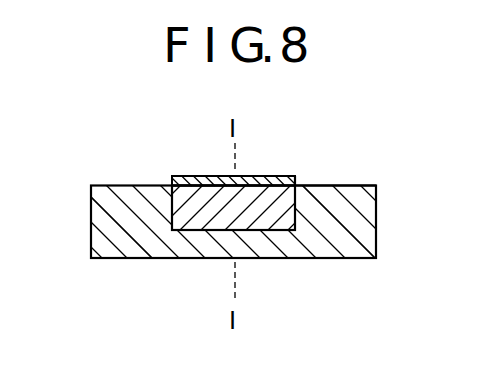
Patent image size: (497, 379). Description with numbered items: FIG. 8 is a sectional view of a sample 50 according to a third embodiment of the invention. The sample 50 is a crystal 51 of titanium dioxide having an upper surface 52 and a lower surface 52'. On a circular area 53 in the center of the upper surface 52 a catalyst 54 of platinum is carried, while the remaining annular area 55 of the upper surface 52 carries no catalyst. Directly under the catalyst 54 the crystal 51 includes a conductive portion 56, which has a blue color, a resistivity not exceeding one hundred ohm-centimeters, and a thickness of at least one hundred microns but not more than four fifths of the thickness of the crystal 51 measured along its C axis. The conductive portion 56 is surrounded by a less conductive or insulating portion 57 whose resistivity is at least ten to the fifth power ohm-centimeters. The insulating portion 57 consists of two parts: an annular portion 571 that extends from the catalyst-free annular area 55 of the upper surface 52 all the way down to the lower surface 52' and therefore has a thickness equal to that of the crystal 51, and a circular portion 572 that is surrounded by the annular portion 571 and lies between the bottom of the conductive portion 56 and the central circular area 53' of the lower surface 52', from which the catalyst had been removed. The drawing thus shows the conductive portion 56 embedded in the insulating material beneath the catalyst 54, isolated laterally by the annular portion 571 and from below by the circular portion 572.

The sample 50 is at (90, 251).
The crystal 51 is at (377, 210).
The upper surface 52 is at (339, 163).
The lower surface 52' is at (338, 282).
The circular area 53 is at (302, 162).
The central circular area 53' is at (265, 282).
The catalyst 54 is at (250, 176).
The annular area 55 is at (132, 185).
The conductive portion 56 is at (201, 197).
The insulating portion 57 is at (347, 238).
The annular portion 571 is at (100, 215).
The circular portion 572 is at (211, 259).